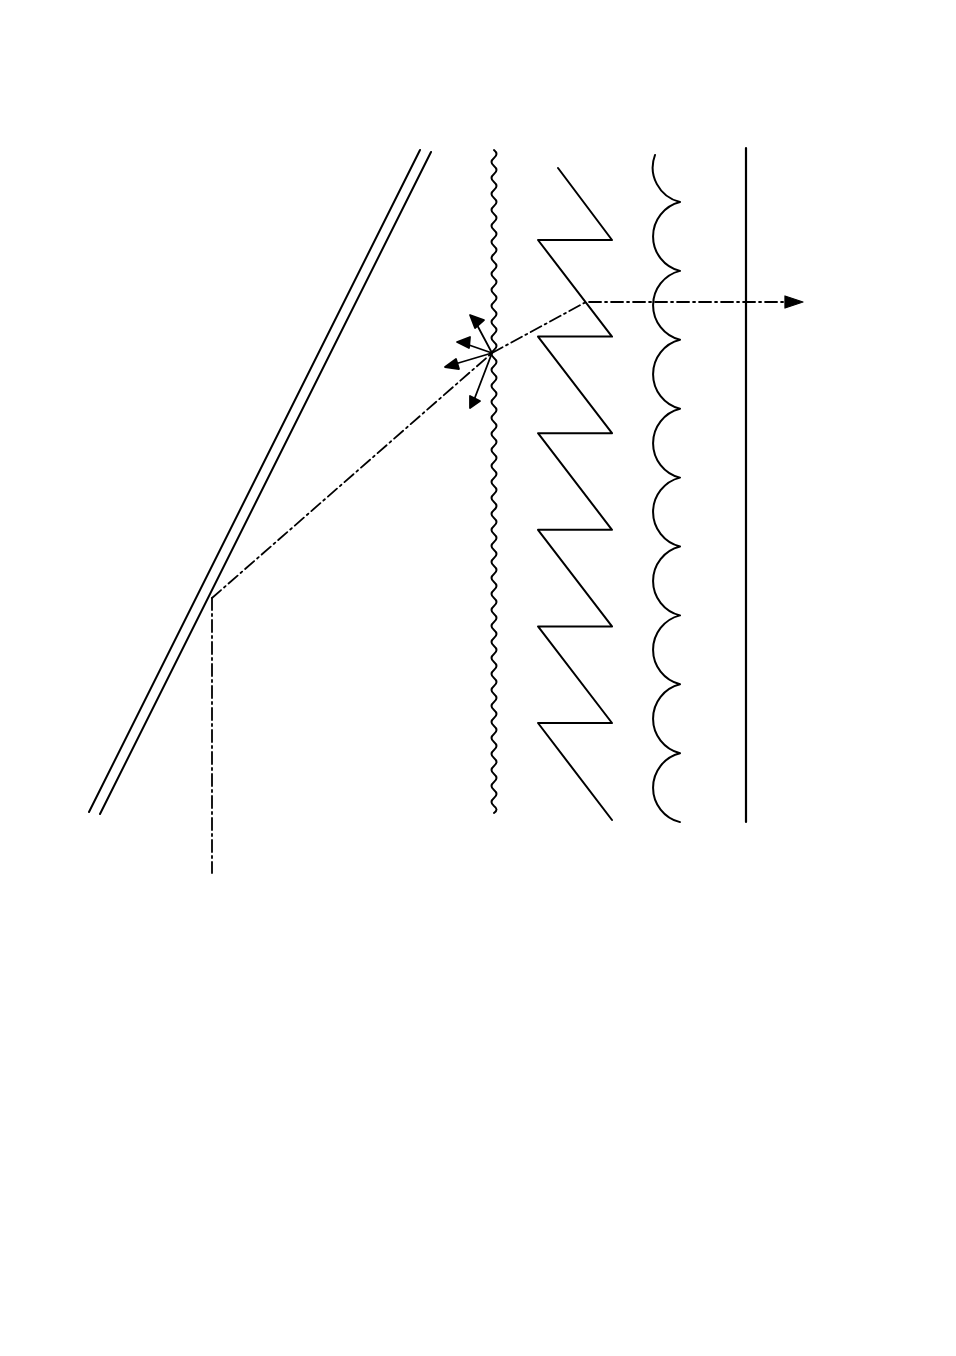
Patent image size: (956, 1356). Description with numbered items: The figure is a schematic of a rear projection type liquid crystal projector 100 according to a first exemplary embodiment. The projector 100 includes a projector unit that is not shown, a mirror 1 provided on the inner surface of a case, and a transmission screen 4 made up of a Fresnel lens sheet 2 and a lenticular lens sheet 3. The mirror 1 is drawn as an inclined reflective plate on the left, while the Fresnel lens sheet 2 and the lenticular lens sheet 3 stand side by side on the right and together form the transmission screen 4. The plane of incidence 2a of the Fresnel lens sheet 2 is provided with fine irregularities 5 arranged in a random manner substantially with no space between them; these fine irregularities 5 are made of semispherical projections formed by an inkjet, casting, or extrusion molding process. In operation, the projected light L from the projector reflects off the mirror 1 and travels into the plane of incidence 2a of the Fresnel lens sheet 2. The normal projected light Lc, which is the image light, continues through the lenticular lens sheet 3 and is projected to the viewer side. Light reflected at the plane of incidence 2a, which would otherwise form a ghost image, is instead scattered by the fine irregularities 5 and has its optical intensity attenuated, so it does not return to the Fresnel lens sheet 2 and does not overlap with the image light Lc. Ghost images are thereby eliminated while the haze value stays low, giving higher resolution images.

The rear projection type liquid crystal projector 100 is at (130, 212).
The mirror 1 is at (358, 273).
The Fresnel lens sheet 2 is at (528, 165).
The plane of incidence 2a is at (490, 515).
The lenticular lens sheet 3 is at (700, 165).
The transmission screen 4 is at (752, 58).
The fine irregularities 5 is at (490, 452).
The projected light L is at (213, 795).
The normal projected light Lc is at (770, 300).